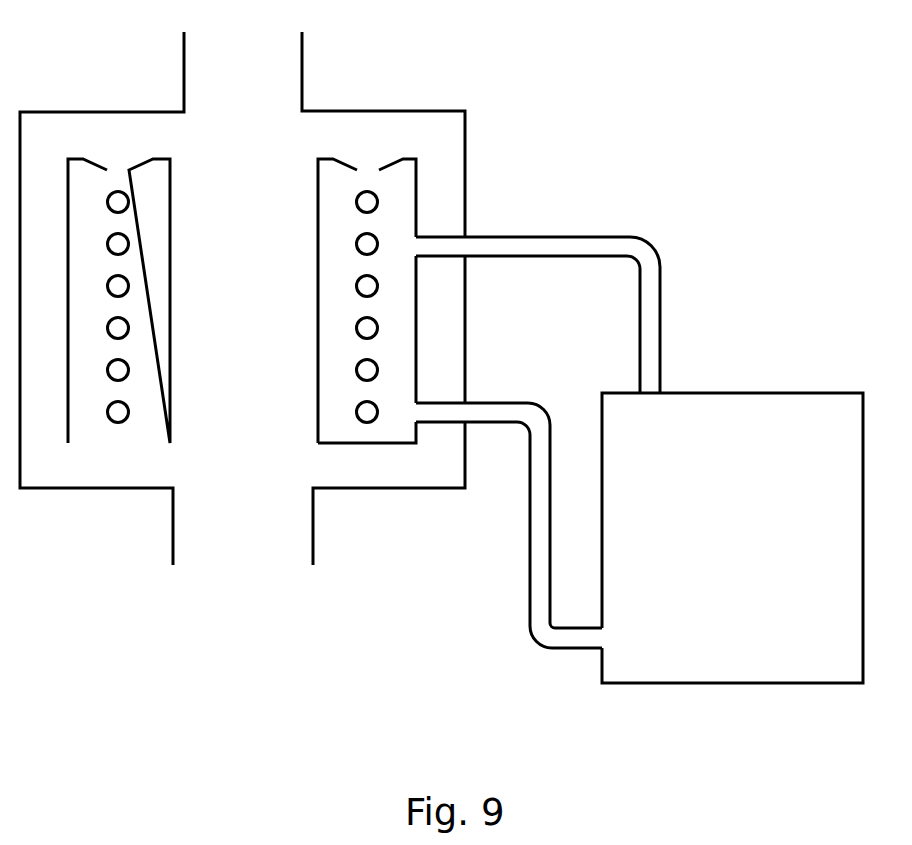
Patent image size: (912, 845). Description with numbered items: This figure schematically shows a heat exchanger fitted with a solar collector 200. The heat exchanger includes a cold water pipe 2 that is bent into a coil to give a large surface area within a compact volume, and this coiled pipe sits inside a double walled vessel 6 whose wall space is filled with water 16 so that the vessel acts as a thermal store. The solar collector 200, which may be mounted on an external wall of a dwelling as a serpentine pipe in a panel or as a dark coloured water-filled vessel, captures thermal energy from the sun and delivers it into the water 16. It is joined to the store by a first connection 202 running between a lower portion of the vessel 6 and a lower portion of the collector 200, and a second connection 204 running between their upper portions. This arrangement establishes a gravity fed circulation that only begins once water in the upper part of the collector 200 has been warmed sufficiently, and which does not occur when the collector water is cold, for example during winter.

The cold water pipe 2 is at (118, 424).
The double walled vessel 6 is at (417, 220).
The water 16 is at (397, 302).
The solar collector 200 is at (800, 393).
The first connection 202 is at (530, 587).
The second connection 204 is at (661, 272).